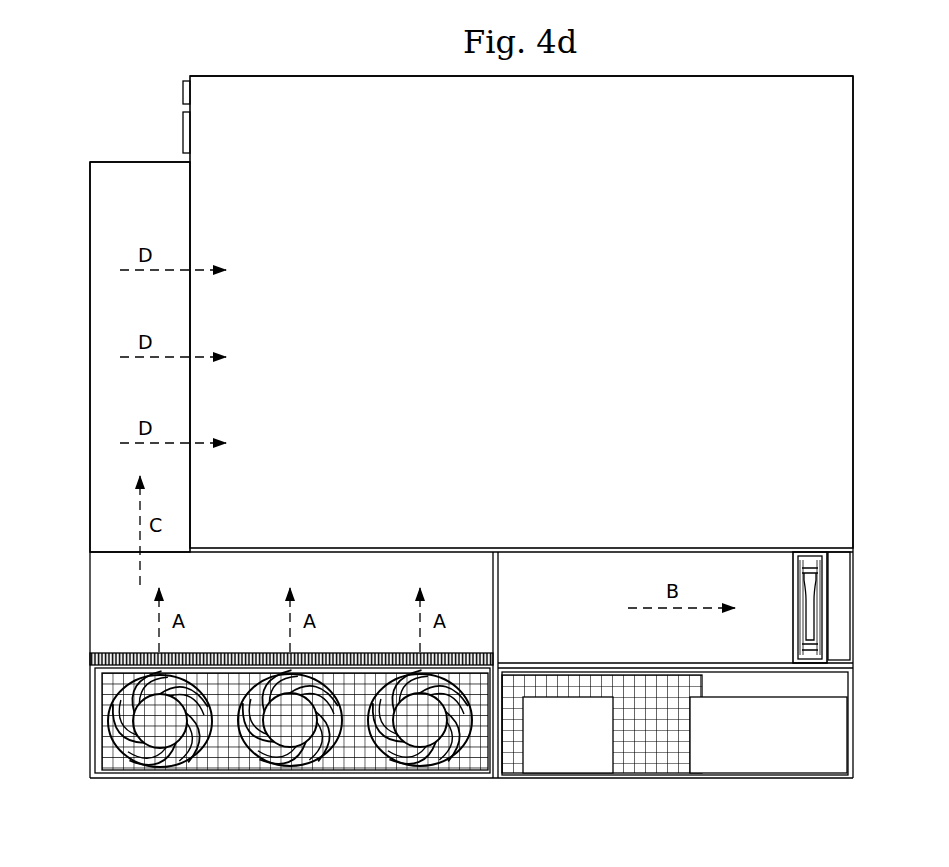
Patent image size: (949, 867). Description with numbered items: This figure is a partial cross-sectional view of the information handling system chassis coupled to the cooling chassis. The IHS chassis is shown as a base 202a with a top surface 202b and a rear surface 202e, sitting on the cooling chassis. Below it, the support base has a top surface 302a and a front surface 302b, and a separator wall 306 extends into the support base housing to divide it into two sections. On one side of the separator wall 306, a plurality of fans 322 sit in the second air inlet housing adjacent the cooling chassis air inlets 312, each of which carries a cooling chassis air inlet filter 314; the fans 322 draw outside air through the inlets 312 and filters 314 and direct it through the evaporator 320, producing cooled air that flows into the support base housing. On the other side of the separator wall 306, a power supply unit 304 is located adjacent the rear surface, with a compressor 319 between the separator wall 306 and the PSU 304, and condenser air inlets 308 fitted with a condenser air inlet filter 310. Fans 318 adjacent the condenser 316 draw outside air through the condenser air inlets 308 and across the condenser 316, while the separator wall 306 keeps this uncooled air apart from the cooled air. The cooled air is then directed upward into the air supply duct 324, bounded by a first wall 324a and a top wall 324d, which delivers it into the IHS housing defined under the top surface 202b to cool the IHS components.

The base 202a is at (855, 216).
The top surface 202b is at (670, 76).
The rear surface 202e is at (855, 298).
The top surface 302a is at (553, 552).
The front surface 302b is at (90, 600).
The power supply unit 304 is at (768, 735).
The separator wall 306 is at (498, 627).
The condenser air inlets 308 is at (700, 766).
The condenser air inlet filter 310 is at (658, 775).
The cooling chassis air inlets 312 is at (90, 745).
The cooling chassis air inlet filter 314 is at (102, 712).
The condenser 316 is at (852, 630).
The fans 318 is at (793, 618).
The compressor 319 is at (568, 735).
The evaporator 320 is at (250, 653).
The fans 322 is at (200, 768).
The air supply duct 324 is at (88, 220).
The first wall 324a is at (90, 345).
The top wall 324d is at (140, 162).